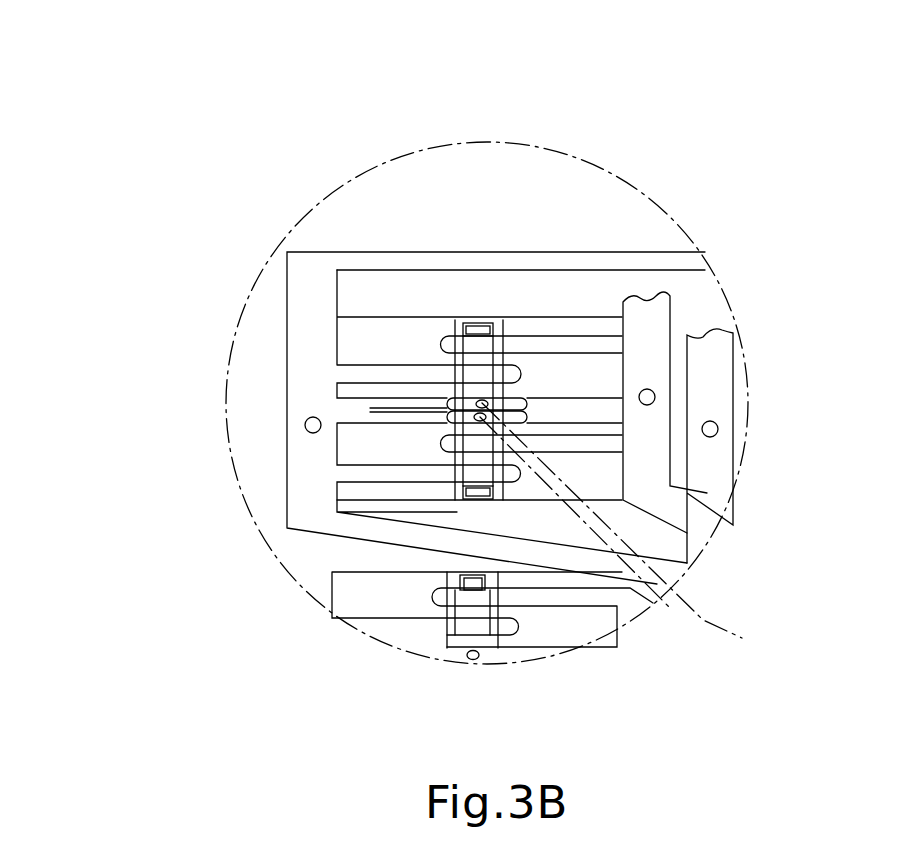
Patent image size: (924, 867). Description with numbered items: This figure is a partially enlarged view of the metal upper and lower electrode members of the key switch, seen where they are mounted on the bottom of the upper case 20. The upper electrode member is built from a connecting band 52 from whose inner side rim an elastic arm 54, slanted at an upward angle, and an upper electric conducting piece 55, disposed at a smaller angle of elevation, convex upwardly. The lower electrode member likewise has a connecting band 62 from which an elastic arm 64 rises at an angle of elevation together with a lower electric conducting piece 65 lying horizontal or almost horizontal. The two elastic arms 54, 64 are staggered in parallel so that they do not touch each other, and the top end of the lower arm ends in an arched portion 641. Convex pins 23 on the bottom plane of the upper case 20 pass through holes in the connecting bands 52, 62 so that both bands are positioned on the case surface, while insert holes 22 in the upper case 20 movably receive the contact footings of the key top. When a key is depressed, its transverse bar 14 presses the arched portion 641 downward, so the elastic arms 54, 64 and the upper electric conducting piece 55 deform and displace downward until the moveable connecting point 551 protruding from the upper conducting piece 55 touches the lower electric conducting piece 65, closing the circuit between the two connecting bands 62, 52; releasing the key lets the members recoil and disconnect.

The upper case 20 is at (425, 342).
The connecting band 52 is at (310, 363).
The elastic arm 54 is at (460, 399).
The arched portion 641 is at (473, 333).
The insert hole 22 is at (503, 322).
The transverse bar 14 is at (503, 320).
The upper electric conducting piece 55 is at (476, 402).
The moveable connecting point 551 is at (647, 533).
The elastic arm 64 is at (600, 332).
The connecting band 62 is at (653, 363).
The lower electric conducting piece 65 is at (570, 410).
The convex pin 23 is at (656, 398).